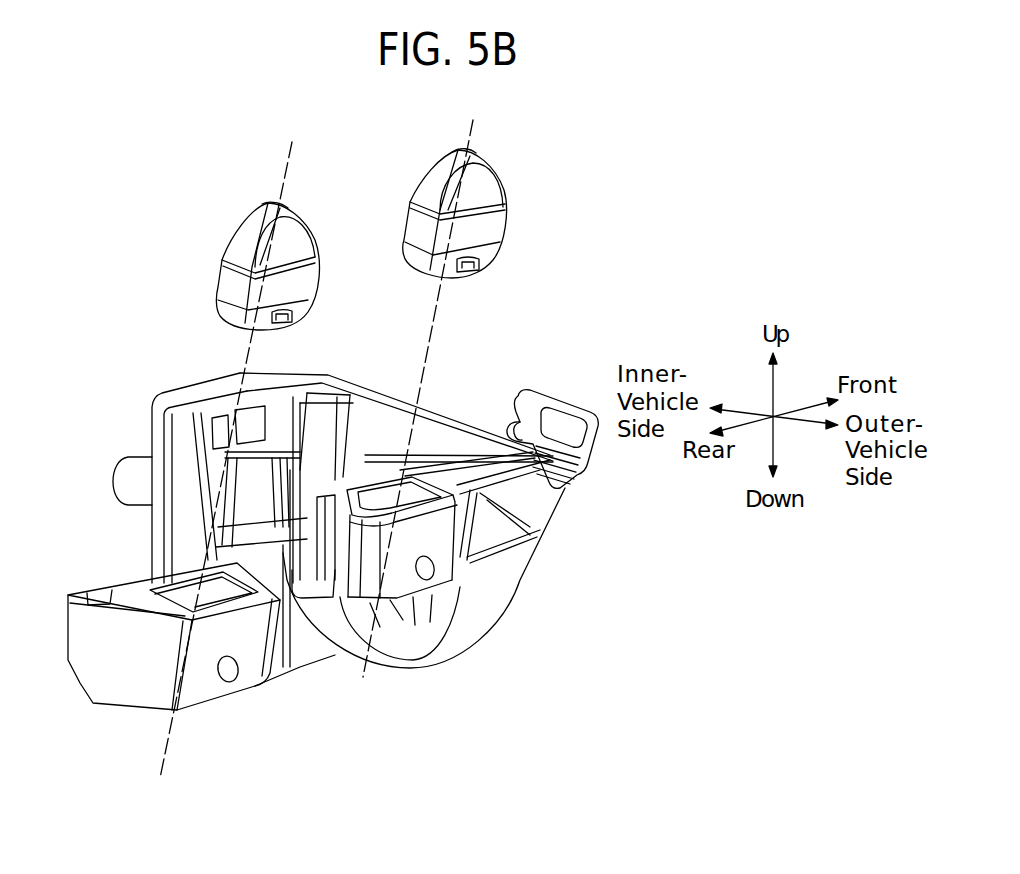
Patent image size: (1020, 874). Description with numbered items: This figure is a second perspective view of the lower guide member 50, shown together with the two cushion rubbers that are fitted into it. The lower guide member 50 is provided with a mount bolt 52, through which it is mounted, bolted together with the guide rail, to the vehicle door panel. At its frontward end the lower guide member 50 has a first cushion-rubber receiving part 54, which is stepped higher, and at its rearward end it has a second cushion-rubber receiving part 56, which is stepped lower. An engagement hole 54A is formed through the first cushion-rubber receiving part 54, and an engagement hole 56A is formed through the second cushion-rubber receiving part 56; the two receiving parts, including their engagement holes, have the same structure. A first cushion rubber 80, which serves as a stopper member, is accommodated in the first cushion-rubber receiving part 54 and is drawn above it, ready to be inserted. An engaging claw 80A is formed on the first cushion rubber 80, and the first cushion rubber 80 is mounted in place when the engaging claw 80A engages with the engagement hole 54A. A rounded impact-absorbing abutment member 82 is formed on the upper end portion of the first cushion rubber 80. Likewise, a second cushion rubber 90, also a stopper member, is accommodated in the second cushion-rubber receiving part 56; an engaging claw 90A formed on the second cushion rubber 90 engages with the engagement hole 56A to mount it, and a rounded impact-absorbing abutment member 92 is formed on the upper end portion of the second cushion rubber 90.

The lower guide member 50 is at (500, 611).
The mount bolt 52 is at (128, 457).
The first cushion-rubber receiving part 54 is at (423, 490).
The engagement hole 54A is at (423, 582).
The second cushion-rubber receiving part 56 is at (147, 578).
The engagement hole 56A is at (227, 682).
The first cushion rubber 80 is at (478, 193).
The engaging claw 80A is at (479, 269).
The rounded impact-absorbing abutment member 82 is at (452, 152).
The second cushion rubber 90 is at (290, 245).
The engaging claw 90A is at (292, 322).
The rounded impact-absorbing abutment member 92 is at (262, 204).